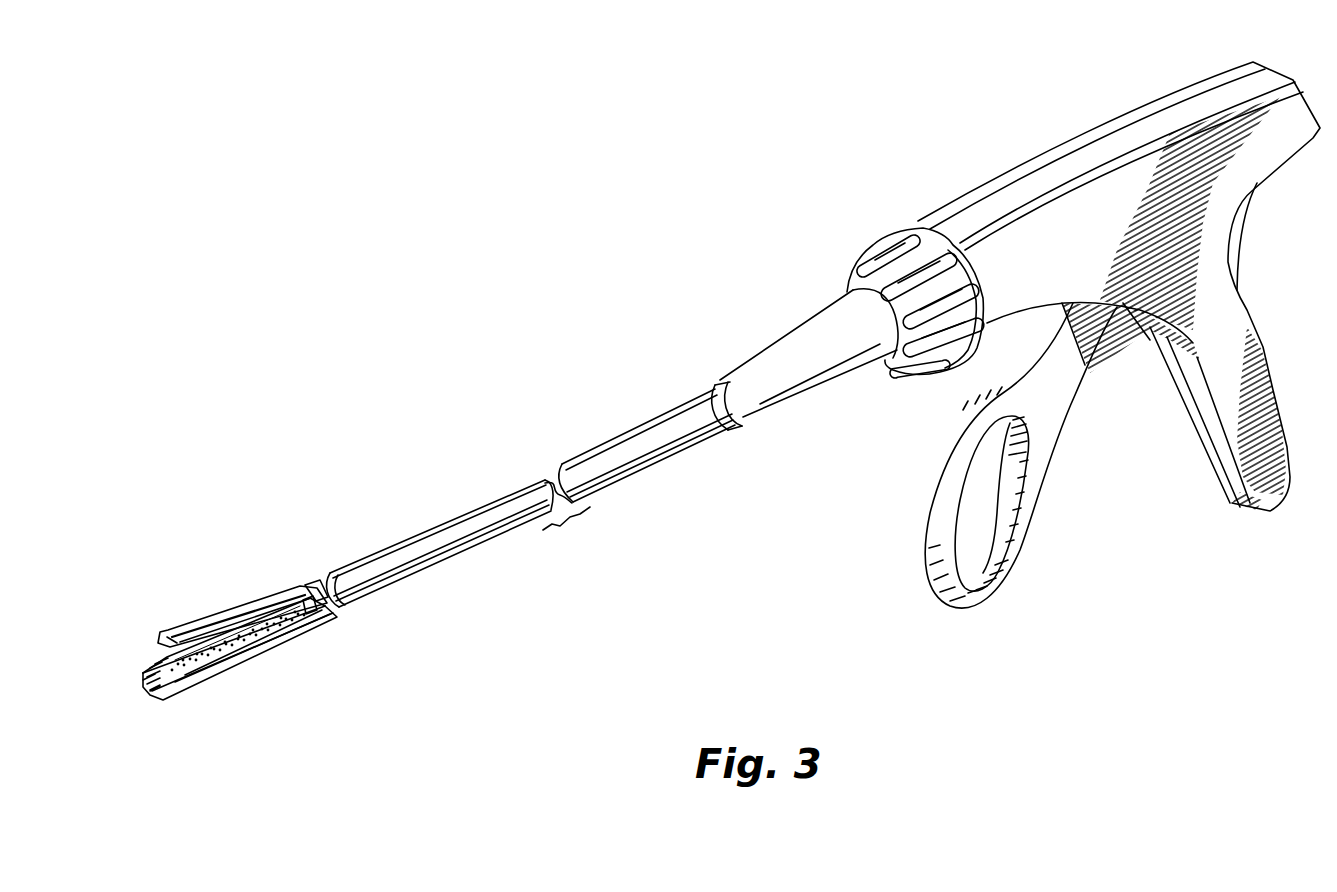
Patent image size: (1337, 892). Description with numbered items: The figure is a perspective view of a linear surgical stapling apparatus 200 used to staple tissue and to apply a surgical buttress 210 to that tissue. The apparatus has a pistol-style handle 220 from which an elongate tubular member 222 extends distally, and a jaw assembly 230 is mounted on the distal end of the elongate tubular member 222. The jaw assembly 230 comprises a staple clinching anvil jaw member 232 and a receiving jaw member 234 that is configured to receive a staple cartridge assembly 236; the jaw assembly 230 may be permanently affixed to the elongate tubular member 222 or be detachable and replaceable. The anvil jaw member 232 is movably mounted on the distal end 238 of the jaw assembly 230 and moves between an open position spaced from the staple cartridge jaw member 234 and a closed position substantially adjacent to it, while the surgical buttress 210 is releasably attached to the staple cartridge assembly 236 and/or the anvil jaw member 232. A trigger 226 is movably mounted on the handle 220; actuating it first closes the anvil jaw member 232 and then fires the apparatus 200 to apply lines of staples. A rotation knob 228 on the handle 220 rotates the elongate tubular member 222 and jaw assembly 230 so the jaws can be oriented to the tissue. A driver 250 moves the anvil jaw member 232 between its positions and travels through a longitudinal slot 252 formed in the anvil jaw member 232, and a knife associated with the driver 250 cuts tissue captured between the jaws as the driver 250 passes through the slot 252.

The surgical stapling apparatus 200 is at (418, 320).
The surgical buttress 210 is at (250, 644).
The handle 220 is at (1005, 168).
The elongate tubular member 222 is at (672, 410).
The trigger 226 is at (933, 532).
The rotation knob 228 is at (866, 266).
The jaw assembly 230 is at (257, 676).
The staple clinching anvil jaw member 232 is at (243, 591).
The receiving jaw member 234 is at (181, 697).
The staple cartridge assembly 236 is at (212, 678).
The distal end of jaw assembly 238 is at (311, 613).
The driver 250 is at (313, 585).
The longitudinal slot 252 is at (248, 608).